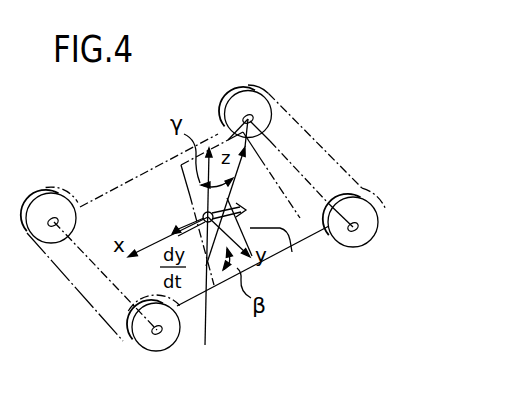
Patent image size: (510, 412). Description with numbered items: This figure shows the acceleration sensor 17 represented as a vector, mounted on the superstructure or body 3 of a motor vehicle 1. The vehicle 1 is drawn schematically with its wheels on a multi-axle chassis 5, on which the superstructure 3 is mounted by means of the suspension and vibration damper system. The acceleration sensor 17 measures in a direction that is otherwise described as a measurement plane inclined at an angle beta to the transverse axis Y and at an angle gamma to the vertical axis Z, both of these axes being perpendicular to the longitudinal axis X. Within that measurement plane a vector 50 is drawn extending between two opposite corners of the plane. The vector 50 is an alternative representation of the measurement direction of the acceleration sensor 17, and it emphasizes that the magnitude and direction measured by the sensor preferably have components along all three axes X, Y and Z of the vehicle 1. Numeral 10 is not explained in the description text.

The motor vehicle 1 is at (336, 119).
The vehicle superstructure 3 is at (100, 194).
The multi-axle chassis 5 is at (139, 360).
The sensor unit 10 is at (180, 166).
The acceleration sensor 17 is at (292, 252).
The vector 50 is at (237, 177).